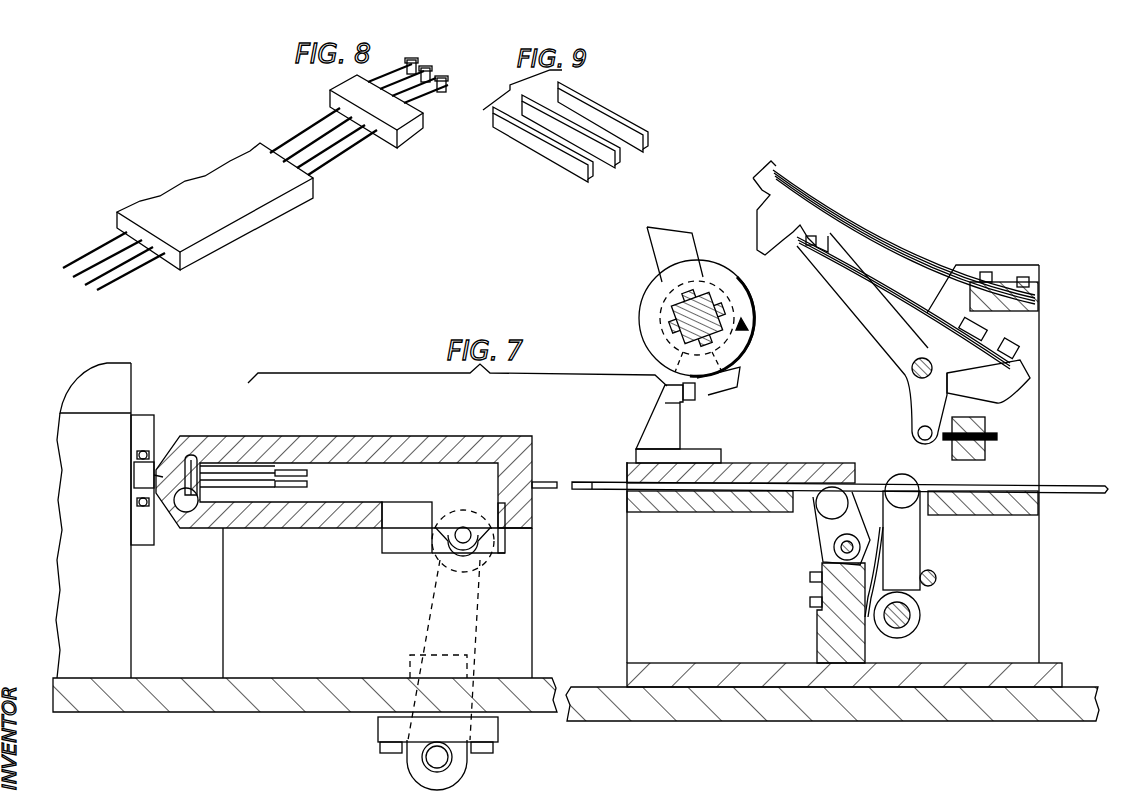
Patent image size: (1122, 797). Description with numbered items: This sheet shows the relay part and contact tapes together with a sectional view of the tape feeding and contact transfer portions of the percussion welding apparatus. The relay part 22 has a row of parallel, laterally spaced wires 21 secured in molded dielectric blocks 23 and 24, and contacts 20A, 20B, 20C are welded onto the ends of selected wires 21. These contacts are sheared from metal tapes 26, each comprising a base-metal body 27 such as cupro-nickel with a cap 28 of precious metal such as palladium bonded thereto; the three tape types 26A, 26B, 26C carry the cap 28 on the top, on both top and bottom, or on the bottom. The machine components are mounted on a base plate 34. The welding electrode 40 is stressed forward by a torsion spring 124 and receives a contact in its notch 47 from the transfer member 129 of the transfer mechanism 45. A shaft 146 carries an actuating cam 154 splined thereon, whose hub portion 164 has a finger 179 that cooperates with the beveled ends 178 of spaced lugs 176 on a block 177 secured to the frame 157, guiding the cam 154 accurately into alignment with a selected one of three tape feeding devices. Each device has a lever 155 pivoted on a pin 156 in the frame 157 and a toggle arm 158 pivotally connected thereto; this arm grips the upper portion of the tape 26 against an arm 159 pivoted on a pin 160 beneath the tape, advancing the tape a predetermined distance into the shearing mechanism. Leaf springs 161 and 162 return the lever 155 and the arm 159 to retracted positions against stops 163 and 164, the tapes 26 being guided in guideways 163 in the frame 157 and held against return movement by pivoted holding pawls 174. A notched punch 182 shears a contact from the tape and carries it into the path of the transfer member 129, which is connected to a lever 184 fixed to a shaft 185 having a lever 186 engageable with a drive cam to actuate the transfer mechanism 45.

In FIG. 8, the contact 20A is at (430, 58).
In FIG. 8, the contact 20B is at (432, 66).
In FIG. 8, the contact 20C is at (447, 80).
In FIG. 8, the wires 21 is at (323, 150).
In FIG. 8, the relay part 22 is at (223, 130).
In FIG. 8, the molded block 23 is at (410, 136).
In FIG. 8, the molded block 24 is at (263, 212).
In FIG. 9, the tape 26 is at (621, 111).
In FIG. 7, the tape 26 is at (600, 483).
In FIG. 9, the contact tape 26A is at (650, 147).
In FIG. 9, the contact tape 26B is at (621, 165).
In FIG. 9, the contact tape 26C is at (593, 183).
In FIG. 9, the body 27 is at (577, 173).
In FIG. 9, the cap 28 is at (567, 148).
In FIG. 7, the base plate 34 is at (227, 702).
In FIG. 7, the welding electrode 40 is at (133, 473).
In FIG. 7, the notch 47 is at (139, 502).
In FIG. 7, the torsion spring 124 is at (75, 455).
In FIG. 7, the transfer member 129 is at (240, 458).
In FIG. 7, the transfer mechanism 45 is at (428, 572).
In FIG. 7, the shaft 146 is at (670, 317).
In FIG. 7, the actuating cam 154 is at (665, 252).
In FIG. 7, the lever 155 is at (793, 258).
In FIG. 7, the pin 156 is at (912, 372).
In FIG. 7, the frame 157 is at (1033, 348).
In FIG. 7, the toggle arm 158 is at (912, 453).
In FIG. 7, the arm 159 is at (908, 559).
In FIG. 7, the pin 160 is at (910, 621).
In FIG. 7, the leaf spring 161 is at (908, 261).
In FIG. 7, the leaf spring 162 is at (880, 536).
In FIG. 7, the stop 163 is at (703, 491).
In FIG. 7, the stop 164 is at (660, 337).
In FIG. 7, the holding pawl 174 is at (828, 516).
In FIG. 7, the lug 176 is at (672, 403).
In FIG. 7, the block 177 is at (658, 427).
In FIG. 7, the beveled end 178 is at (693, 397).
In FIG. 7, the finger 179 is at (720, 383).
In FIG. 7, the punch 182 is at (190, 457).
In FIG. 7, the lever 184 is at (467, 632).
In FIG. 7, the shaft 185 is at (443, 758).
In FIG. 7, the lever 186 is at (410, 677).